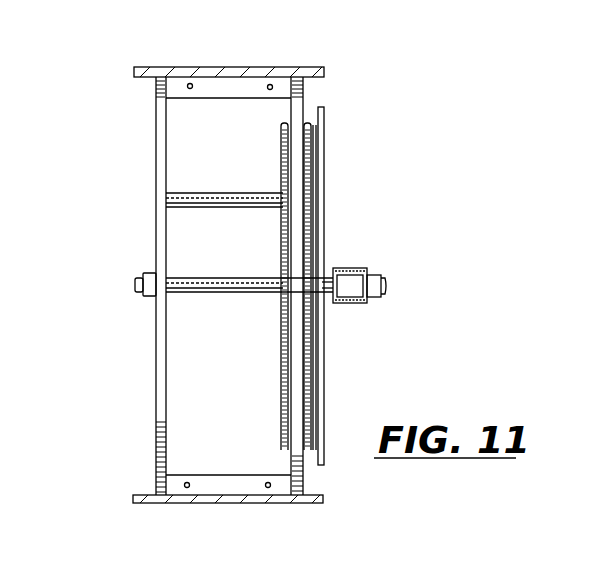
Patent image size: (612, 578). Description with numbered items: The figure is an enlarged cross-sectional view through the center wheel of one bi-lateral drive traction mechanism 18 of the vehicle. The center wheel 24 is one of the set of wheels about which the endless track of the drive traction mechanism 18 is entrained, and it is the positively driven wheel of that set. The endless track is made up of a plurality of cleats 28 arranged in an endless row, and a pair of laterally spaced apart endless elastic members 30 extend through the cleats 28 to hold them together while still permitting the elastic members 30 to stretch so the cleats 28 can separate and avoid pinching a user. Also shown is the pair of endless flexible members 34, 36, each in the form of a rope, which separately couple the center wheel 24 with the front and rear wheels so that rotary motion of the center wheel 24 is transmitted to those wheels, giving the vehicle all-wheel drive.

The bi-lateral drive traction mechanism 18 is at (118, 50).
The center wheel 24 is at (160, 357).
The cleats 28 is at (245, 72).
The endless elastic members 30 is at (188, 88).
The endless flexible member 34 is at (307, 216).
The endless flexible member 36 is at (291, 232).